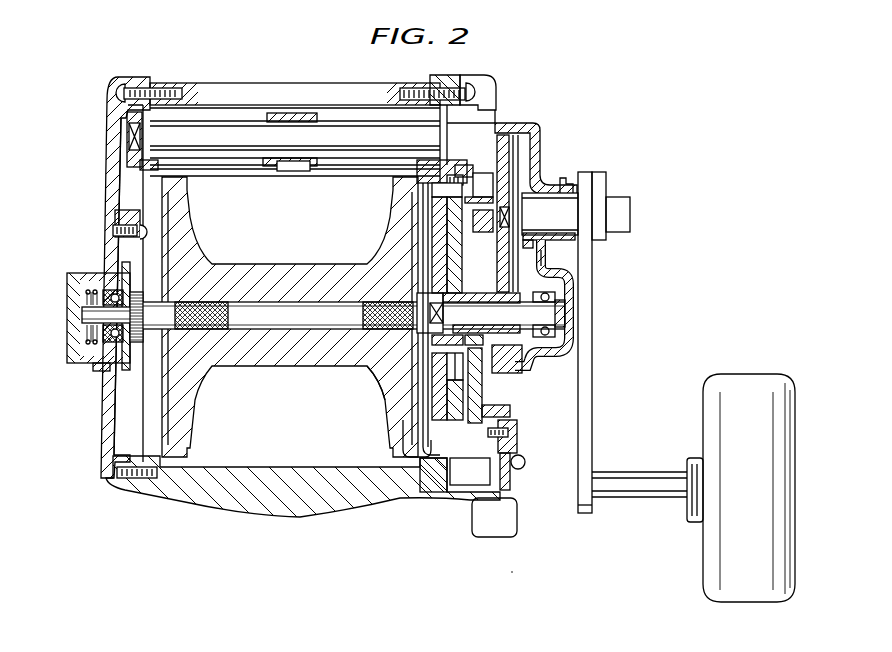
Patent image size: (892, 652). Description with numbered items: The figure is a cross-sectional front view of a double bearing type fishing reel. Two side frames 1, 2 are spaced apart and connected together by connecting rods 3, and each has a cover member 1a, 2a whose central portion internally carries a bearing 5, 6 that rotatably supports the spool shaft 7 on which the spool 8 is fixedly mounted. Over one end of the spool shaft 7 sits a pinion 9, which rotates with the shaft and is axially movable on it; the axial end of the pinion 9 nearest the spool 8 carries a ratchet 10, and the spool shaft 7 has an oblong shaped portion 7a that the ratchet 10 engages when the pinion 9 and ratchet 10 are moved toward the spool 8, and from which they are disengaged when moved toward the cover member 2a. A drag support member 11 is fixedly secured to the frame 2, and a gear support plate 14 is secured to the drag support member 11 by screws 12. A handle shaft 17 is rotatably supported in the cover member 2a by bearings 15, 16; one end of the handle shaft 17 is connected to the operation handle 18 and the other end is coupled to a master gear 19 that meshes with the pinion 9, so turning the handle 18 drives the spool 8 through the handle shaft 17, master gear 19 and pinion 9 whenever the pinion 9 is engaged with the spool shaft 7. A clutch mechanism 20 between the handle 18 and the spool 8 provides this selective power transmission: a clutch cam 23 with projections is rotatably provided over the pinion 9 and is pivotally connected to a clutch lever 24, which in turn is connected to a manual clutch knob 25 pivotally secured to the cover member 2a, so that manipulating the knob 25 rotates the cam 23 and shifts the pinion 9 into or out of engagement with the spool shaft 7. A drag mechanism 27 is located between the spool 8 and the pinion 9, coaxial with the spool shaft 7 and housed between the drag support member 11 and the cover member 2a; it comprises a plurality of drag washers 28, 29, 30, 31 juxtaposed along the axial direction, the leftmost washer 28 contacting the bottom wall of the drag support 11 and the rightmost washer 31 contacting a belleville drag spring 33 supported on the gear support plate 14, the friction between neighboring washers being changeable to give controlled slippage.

The side frame 1 is at (107, 109).
The cover member 1a is at (105, 148).
The side frame 2 is at (478, 74).
The cover member 2a is at (486, 78).
The connecting rods 3 is at (227, 83).
The bearing 5 is at (127, 353).
The bearing 6 is at (557, 297).
The spool shaft 7 is at (270, 313).
The oblong shaped portion 7a is at (410, 300).
The spool 8 is at (230, 268).
The pinion 9 is at (528, 355).
The ratchet 10 is at (383, 375).
The drag support member 11 is at (447, 448).
The screws 12 is at (468, 165).
The gear support plate 14 is at (548, 268).
The bearing 15 is at (481, 190).
The bearing 16 is at (568, 177).
The handle shaft 17 is at (560, 216).
The operation handle 18 is at (587, 363).
The master gear 19 is at (528, 124).
The clutch mechanism 20 is at (520, 481).
The clutch cam 23 is at (487, 370).
The clutch lever 24 is at (510, 408).
The manual clutch knob 25 is at (507, 523).
The drag mechanism 27 is at (432, 223).
The drag washer 28 is at (432, 395).
The drag washer 29 is at (445, 440).
The drag washer 30 is at (411, 452).
The drag washer 31 is at (470, 470).
The drag spring 33 is at (518, 422).